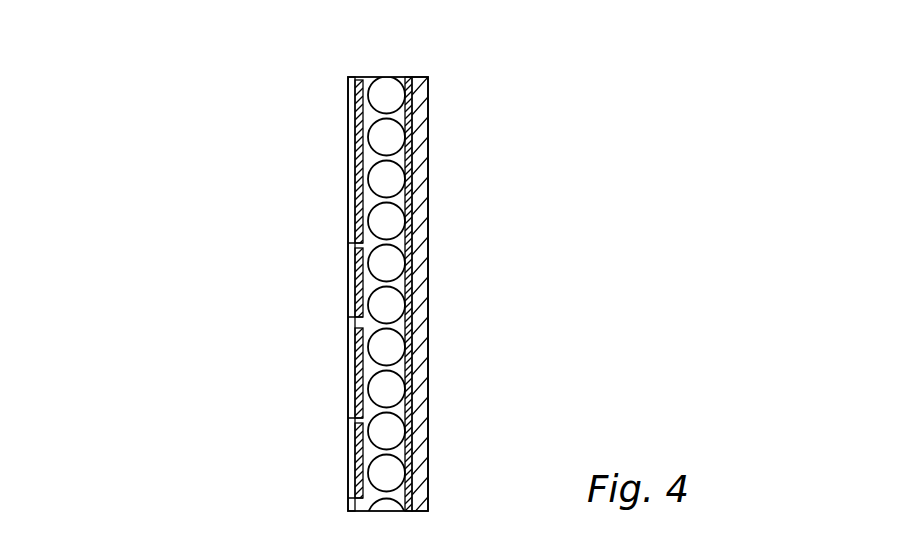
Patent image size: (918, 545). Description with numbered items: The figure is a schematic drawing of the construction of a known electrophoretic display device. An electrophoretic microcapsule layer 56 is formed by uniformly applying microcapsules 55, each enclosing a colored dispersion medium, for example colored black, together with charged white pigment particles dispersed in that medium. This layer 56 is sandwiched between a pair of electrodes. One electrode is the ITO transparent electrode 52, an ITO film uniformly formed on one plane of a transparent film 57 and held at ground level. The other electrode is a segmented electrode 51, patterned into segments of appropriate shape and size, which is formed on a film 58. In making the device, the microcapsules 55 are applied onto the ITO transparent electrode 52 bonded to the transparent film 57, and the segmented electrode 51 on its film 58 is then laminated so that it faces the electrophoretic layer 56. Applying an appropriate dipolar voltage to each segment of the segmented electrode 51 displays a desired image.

The segmented electrode 51 is at (357, 191).
The ITO transparent electrode 52 is at (412, 322).
The microcapsule 55 is at (255, 133).
The electrophoretic microcapsule layer 56 is at (256, 276).
The transparent film 57 is at (428, 232).
The film 58 is at (355, 287).